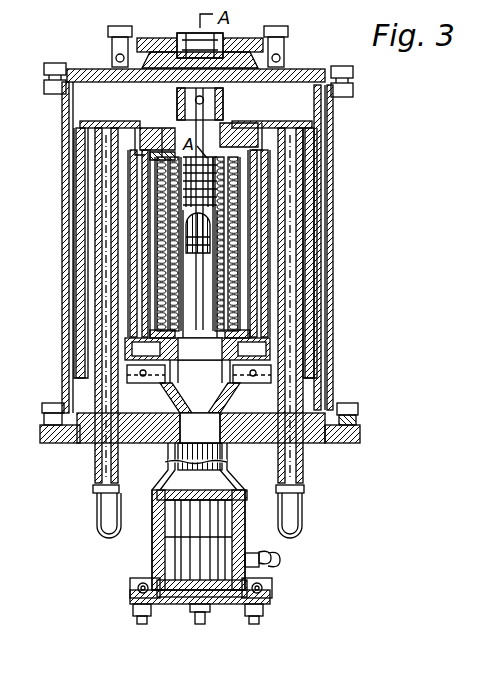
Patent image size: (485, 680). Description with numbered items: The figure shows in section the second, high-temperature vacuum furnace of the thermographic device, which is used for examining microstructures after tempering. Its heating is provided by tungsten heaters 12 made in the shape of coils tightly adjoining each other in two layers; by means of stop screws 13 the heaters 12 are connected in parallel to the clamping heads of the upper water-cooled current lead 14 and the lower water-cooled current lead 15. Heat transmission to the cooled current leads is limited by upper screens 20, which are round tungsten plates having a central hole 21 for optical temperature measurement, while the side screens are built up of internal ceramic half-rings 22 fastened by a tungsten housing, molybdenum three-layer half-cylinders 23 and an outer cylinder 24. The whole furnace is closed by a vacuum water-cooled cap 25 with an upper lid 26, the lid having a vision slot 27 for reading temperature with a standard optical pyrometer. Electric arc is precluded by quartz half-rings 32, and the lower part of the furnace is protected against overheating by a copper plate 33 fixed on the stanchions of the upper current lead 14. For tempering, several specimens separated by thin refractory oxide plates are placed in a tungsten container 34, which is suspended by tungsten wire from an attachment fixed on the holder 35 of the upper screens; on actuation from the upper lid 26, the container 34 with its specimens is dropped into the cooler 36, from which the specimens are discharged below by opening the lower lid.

The tungsten heaters 12 is at (168, 233).
The stop screws 13 is at (131, 142).
The upper water-cooled current lead 14 is at (160, 142).
The lower water-cooled current lead 15 is at (163, 380).
The upper screens 20 is at (240, 193).
The central hole 21 is at (257, 152).
The internal ceramic half-rings 22 is at (170, 291).
The molybdenum three-layer half-cylinders 23 is at (130, 272).
The outer cylinder 24 is at (82, 195).
The vacuum water-cooled cap 25 is at (70, 138).
The upper lid 26 is at (300, 84).
The vision slot 27 is at (195, 40).
The quartz half-rings 32 is at (173, 312).
The copper plate 33 is at (272, 394).
The tungsten container 34 is at (233, 240).
The holder 35 is at (228, 107).
The cooler 36 is at (236, 519).